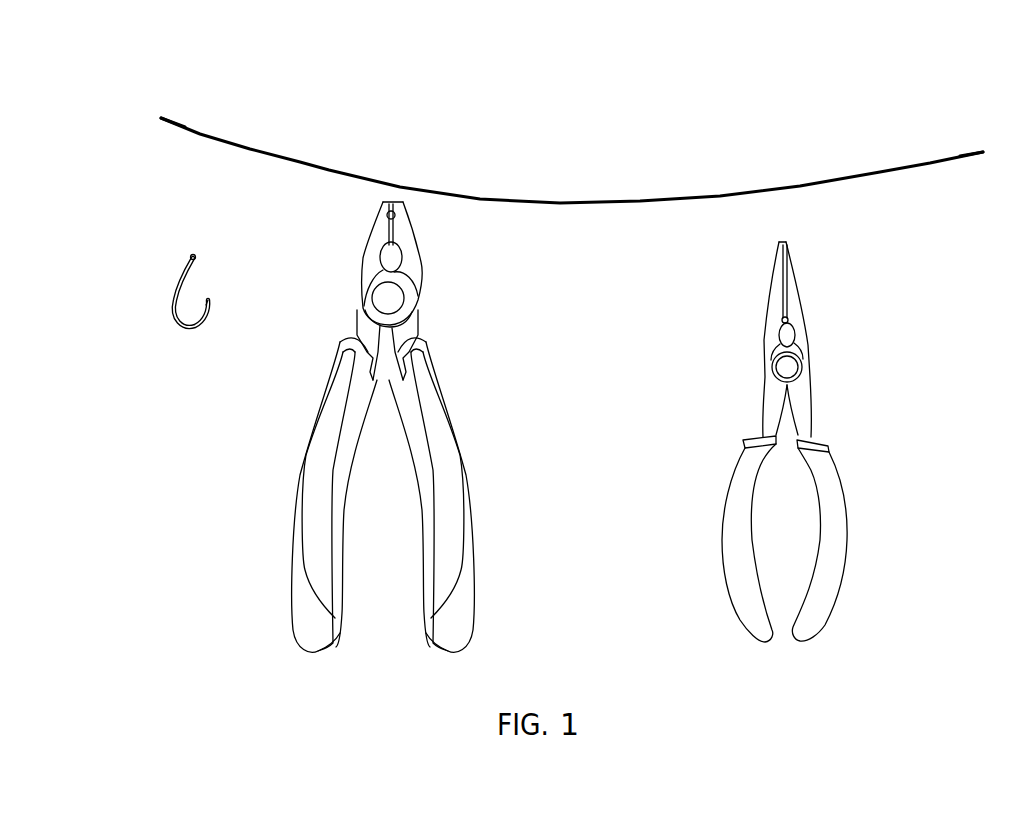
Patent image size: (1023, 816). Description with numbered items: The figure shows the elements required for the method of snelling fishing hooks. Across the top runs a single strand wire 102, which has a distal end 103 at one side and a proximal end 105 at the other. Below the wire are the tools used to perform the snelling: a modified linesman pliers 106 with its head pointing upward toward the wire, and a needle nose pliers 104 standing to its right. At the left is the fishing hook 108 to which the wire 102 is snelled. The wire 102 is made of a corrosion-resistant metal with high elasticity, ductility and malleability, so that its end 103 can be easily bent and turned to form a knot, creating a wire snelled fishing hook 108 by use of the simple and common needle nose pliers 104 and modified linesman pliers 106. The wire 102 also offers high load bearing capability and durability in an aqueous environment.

The wire 102 is at (452, 187).
The distal end 103 is at (173, 121).
The needle nose pliers 104 is at (833, 428).
The proximal end 105 is at (972, 152).
The modified linesman pliers 106 is at (303, 430).
The fishing hook 108 is at (174, 294).